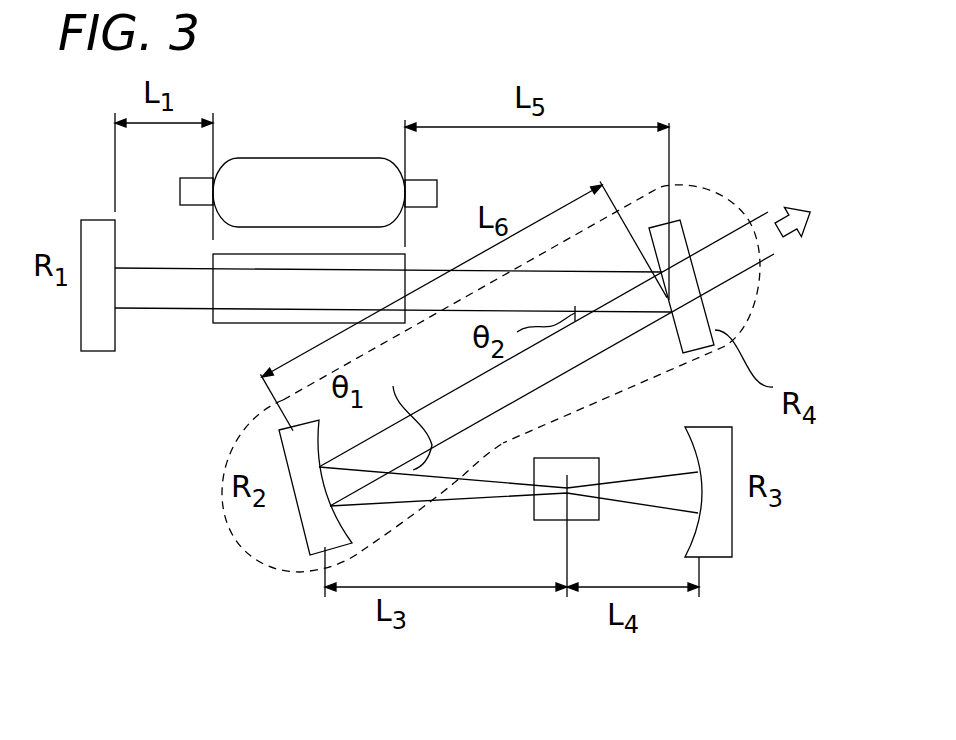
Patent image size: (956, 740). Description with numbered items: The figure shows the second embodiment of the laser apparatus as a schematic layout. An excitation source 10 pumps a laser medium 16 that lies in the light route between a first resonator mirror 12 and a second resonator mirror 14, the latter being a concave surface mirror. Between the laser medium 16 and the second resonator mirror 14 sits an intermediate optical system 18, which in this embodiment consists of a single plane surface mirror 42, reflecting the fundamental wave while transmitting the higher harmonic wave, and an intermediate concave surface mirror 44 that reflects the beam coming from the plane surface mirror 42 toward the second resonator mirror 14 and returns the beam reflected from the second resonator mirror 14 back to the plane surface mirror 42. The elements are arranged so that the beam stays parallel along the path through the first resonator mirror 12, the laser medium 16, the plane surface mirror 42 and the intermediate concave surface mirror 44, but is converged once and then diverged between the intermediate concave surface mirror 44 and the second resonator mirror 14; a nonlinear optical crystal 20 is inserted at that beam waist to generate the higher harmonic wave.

The excitation source 10 is at (300, 176).
The first resonator mirror 12 is at (103, 352).
The second resonator mirror 14 is at (720, 557).
The laser medium 16 is at (238, 323).
The intermediate optical system 18 is at (757, 305).
The nonlinear optical crystal 20 is at (580, 520).
The plane surface mirror 42 is at (660, 228).
The intermediate concave surface mirror 44 is at (293, 492).